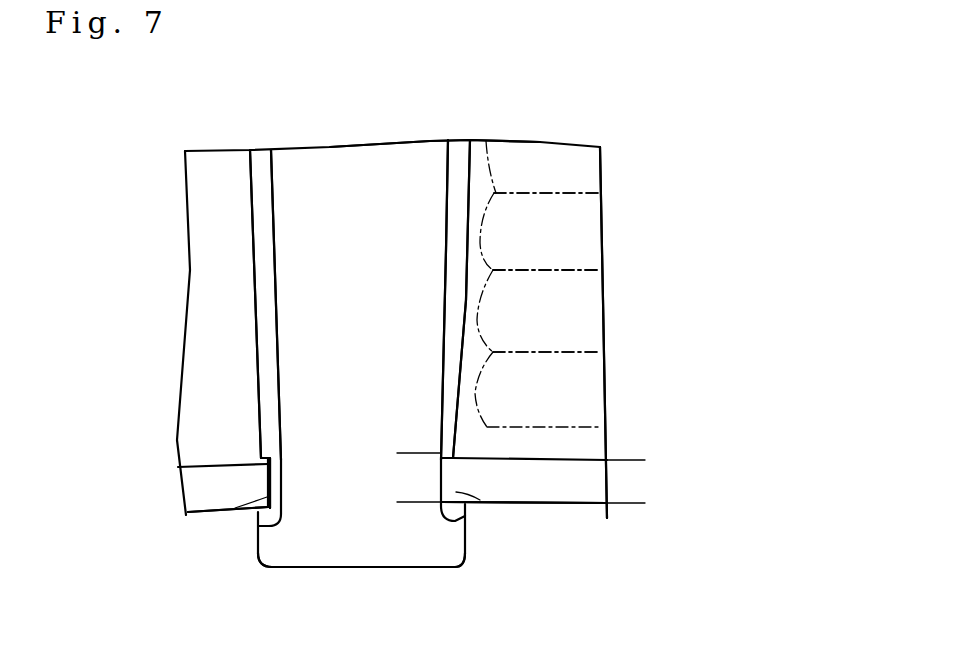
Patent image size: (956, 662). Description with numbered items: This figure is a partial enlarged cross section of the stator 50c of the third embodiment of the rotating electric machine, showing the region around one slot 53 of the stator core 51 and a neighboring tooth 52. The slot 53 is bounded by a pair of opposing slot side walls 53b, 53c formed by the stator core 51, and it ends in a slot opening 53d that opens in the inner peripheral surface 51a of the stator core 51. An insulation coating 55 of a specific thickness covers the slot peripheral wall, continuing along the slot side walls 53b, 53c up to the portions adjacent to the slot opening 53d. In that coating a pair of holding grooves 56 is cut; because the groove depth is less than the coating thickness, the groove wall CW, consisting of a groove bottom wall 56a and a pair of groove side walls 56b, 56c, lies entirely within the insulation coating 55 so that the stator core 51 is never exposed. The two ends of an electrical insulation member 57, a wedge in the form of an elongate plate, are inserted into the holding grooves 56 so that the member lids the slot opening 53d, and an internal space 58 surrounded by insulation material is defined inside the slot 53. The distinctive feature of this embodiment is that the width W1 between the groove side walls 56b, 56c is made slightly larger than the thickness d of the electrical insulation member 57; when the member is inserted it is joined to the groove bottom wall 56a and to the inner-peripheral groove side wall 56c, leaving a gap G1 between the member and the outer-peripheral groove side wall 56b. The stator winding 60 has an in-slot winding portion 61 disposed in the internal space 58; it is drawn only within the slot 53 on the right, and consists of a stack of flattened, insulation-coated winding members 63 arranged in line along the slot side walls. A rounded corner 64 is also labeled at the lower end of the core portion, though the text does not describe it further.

The stator 50c is at (508, 102).
The stator core 51 is at (332, 150).
The inner peripheral surface 51a is at (370, 568).
The teeth 52 is at (397, 150).
The slot 53 is at (473, 350).
The slot side wall 53b is at (446, 203).
The slot side wall 53c is at (272, 215).
The slot opening 53d is at (545, 545).
The insulation coating 55 is at (447, 310).
The holding groove 56 is at (268, 485).
The groove bottom wall 56a is at (457, 462).
The outer-peripheral groove side wall 56b is at (458, 458).
The inner-peripheral groove side wall 56c is at (468, 505).
The electrical insulation member 57 is at (215, 513).
The internal space 58 is at (478, 270).
The stator winding 60 is at (660, 182).
The in-slot winding portion 61 is at (592, 233).
The winding member 63 is at (583, 313).
The rounded corner portion 64 is at (262, 555).
The gap G1 is at (262, 458).
The groove wall CW is at (248, 512).
The width between groove side walls W1 is at (407, 453).
The thickness of electrical insulation member d is at (637, 438).